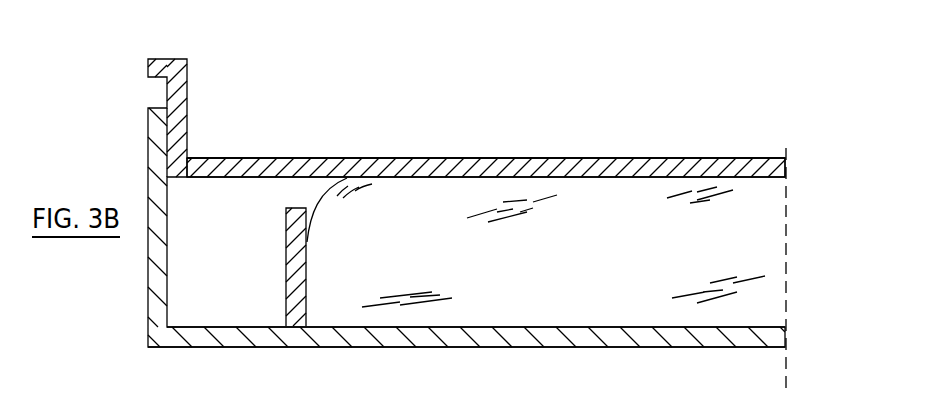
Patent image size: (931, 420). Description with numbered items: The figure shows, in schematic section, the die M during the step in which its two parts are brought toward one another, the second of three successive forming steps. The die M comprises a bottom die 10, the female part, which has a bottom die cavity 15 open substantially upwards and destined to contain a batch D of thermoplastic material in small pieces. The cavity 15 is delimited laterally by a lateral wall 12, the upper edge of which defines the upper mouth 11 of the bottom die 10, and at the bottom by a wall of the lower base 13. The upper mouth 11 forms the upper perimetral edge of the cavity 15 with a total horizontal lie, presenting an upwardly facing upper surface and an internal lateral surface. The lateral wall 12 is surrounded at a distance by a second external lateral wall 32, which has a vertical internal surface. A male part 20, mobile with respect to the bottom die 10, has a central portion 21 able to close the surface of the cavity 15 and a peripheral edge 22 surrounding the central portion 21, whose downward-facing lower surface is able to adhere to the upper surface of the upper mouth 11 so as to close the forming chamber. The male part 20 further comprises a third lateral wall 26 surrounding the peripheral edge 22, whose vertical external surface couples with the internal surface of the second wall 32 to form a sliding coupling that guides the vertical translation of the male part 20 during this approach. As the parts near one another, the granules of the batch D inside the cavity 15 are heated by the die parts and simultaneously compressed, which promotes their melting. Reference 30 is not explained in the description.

The bottom die 10 is at (592, 347).
The upper mouth 11 is at (295, 208).
The lateral wall 12 is at (295, 242).
The lower base 13 is at (442, 346).
The bottom die cavity 15 is at (640, 200).
The male part 20 is at (488, 155).
The central portion 21 is at (427, 158).
The peripheral edge 22 is at (252, 165).
The third lateral wall 26 is at (185, 87).
The frame assembly 30 is at (147, 277).
The second external lateral wall 32 is at (162, 163).
The batch of thermoplastic material D is at (568, 195).
The die M is at (147, 334).